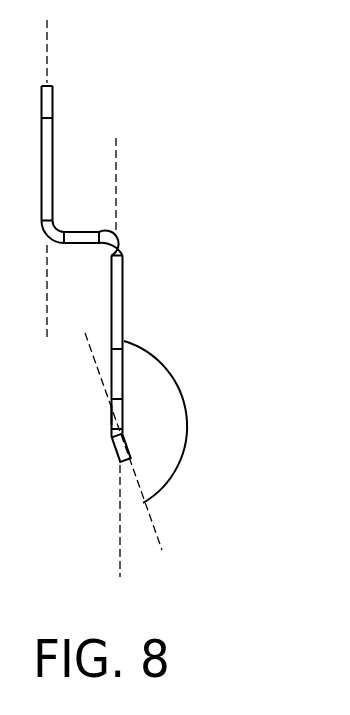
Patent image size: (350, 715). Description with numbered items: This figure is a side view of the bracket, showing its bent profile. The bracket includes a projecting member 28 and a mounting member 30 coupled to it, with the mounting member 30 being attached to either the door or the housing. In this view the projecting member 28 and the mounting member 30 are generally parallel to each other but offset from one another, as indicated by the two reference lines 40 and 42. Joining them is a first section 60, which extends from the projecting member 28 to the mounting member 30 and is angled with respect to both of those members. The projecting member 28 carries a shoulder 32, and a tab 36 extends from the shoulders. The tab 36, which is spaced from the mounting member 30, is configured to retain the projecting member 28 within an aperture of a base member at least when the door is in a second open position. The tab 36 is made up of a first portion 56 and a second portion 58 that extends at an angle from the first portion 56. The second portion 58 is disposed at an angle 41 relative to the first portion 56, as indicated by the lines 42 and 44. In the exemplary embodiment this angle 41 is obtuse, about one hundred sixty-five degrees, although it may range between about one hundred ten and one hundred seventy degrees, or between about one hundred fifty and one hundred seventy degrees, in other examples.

The projecting member 28 is at (118, 290).
The mounting member 30 is at (47, 145).
The shoulder 32 is at (117, 400).
The tab 36 is at (118, 459).
The line 40 is at (47, 52).
The angle 41 is at (163, 364).
The line 42 is at (120, 576).
The line 44 is at (156, 530).
The first portion 56 is at (110, 417).
The second portion 58 is at (112, 444).
The first section 60 is at (75, 240).